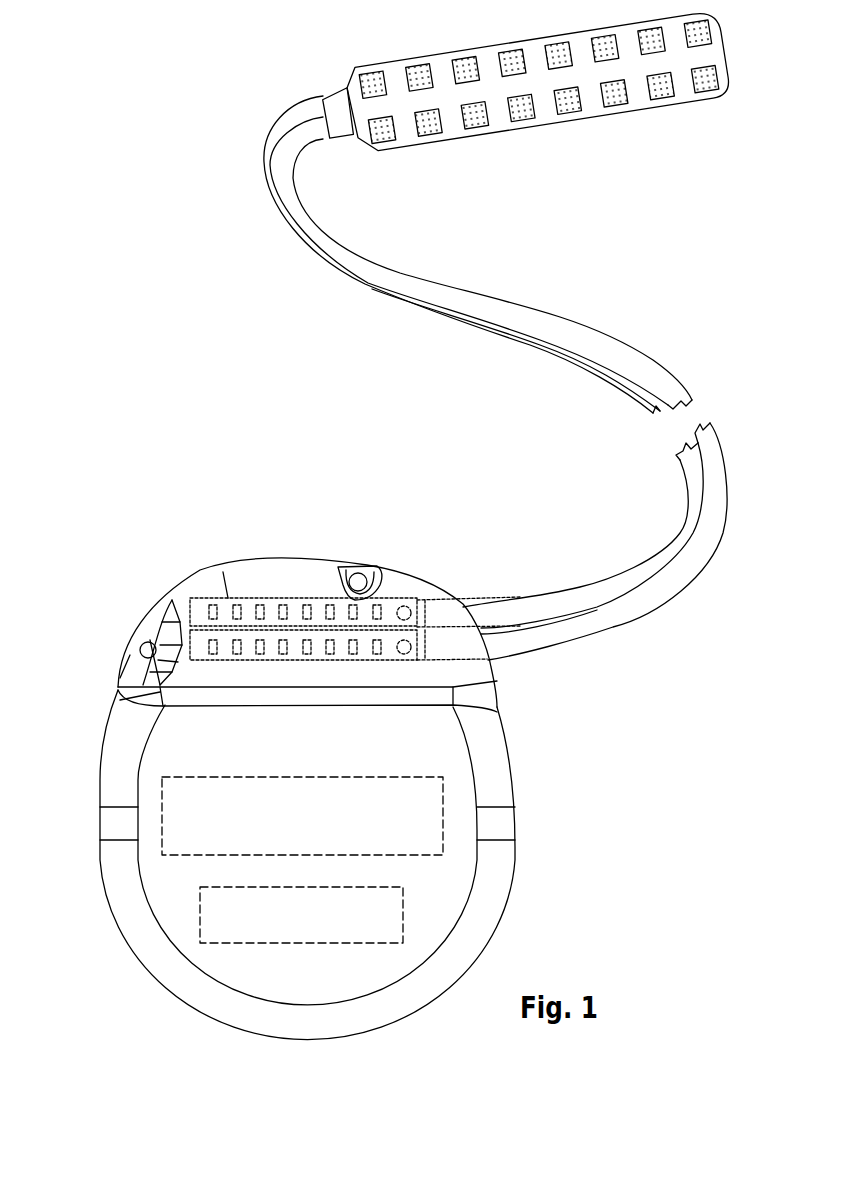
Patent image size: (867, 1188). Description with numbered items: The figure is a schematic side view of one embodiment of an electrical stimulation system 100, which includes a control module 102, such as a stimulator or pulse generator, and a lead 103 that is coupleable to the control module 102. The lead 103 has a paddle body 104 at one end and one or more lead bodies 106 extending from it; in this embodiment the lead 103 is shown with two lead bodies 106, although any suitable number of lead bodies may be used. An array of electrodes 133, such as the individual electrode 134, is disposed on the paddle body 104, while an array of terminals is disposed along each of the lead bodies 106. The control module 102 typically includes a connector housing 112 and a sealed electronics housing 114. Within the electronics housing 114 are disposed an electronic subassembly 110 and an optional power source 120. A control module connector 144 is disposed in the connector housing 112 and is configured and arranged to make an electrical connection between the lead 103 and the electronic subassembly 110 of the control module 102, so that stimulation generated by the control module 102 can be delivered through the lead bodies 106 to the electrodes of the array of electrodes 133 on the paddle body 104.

The electrical stimulation system 100 is at (110, 115).
The control module 102 is at (70, 578).
The lead 103 is at (670, 303).
The paddle body 104 is at (711, 52).
The lead body 106 is at (577, 318).
The electronic subassembly 110 is at (178, 820).
The connector housing 112 is at (145, 588).
The sealed electronics housing 114 is at (77, 733).
The power source 120 is at (217, 918).
The array of electrodes 133 is at (542, 109).
The electrode 134 is at (422, 70).
The control module connector 144 is at (384, 600).